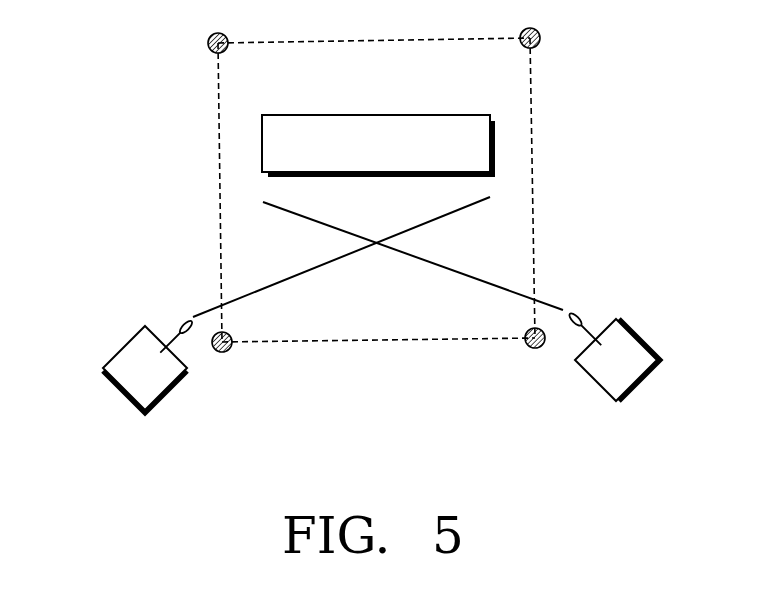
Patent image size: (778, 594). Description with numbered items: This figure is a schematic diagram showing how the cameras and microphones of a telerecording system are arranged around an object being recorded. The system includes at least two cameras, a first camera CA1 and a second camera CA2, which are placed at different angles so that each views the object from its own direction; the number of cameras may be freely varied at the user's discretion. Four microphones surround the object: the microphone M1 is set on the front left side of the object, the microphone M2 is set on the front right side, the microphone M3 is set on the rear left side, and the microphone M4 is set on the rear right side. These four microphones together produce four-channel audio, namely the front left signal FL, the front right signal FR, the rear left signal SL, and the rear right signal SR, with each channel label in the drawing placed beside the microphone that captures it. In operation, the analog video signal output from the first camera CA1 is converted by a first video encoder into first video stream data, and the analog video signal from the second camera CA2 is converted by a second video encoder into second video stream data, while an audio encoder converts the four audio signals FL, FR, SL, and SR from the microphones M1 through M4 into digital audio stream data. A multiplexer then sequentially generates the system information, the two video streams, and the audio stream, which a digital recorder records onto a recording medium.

The microphone M1 is at (249, 359).
The microphone M2 is at (507, 354).
The microphone M3 is at (184, 31).
The microphone M4 is at (560, 27).
The front left audio signal FL is at (252, 367).
The front right audio signal FR is at (530, 347).
The surround left audio signal SL is at (216, 28).
The surround right audio signal SR is at (567, 40).
The first camera CA1 is at (116, 360).
The second camera CA2 is at (652, 352).